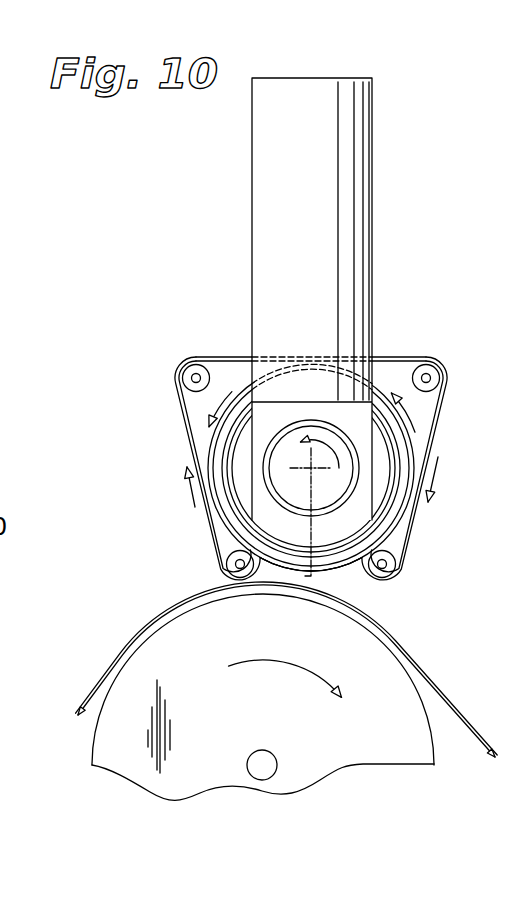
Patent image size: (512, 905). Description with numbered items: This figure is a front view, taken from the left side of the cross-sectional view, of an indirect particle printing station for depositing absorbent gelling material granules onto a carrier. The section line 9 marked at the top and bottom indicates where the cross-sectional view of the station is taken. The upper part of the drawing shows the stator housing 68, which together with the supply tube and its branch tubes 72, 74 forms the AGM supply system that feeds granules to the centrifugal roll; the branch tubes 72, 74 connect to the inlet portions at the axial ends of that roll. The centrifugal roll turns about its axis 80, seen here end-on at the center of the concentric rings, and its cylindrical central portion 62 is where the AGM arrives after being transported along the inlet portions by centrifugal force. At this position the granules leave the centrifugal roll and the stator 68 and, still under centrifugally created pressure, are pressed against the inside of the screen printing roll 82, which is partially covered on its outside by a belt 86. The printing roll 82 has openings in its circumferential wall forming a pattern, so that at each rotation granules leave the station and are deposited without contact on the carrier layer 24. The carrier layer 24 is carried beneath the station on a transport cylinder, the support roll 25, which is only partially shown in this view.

The section line 9 is at (310, 20).
The carrier layer 24 is at (88, 697).
The support roll 25 is at (392, 737).
The central portion 62 is at (362, 588).
The stator housing 68 is at (376, 190).
The branch tube 72 is at (420, 241).
The branch tube 74 is at (351, 254).
The axis 80 is at (315, 475).
The screen printing roll 82 is at (337, 565).
The belt 86 is at (314, 366).